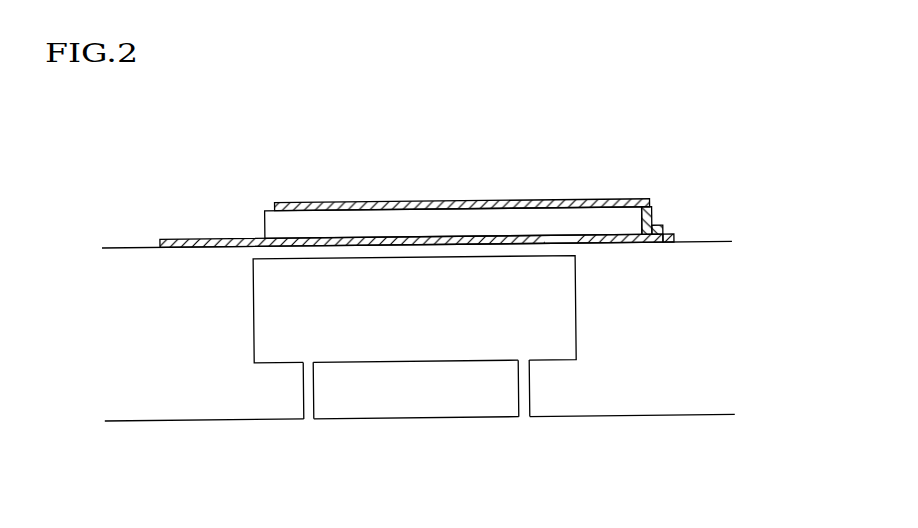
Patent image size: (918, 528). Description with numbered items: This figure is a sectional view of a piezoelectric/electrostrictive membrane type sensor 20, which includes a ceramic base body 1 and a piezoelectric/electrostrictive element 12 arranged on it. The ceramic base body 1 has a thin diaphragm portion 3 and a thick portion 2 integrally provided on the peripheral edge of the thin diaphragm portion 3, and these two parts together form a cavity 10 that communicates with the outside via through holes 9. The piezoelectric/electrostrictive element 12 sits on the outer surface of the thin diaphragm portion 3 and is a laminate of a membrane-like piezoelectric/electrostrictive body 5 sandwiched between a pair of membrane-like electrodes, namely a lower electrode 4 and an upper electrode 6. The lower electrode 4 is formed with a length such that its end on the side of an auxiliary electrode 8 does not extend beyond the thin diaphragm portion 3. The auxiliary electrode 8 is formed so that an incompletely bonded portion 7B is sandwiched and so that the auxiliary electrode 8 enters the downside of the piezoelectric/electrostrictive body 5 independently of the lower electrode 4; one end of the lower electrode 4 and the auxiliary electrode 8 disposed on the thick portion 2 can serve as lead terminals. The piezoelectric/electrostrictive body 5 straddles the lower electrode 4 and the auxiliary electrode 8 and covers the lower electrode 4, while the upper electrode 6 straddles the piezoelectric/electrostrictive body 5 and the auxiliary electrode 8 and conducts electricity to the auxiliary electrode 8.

The ceramic base body 1 is at (782, 248).
The thick portion 2 is at (658, 395).
The thin diaphragm portion 3 is at (415, 260).
The lower electrode 4 is at (160, 245).
The piezoelectric/electrostrictive body 5 is at (270, 230).
The upper electrode 6 is at (293, 204).
The incompletely bonded portion 7B is at (583, 237).
The auxiliary electrode 8 is at (680, 238).
The through holes 9 is at (308, 417).
The cavity 10 is at (552, 345).
The piezoelectric/electrostrictive element 12 is at (782, 196).
The piezoelectric/electrostrictive membrane type sensor 20 is at (700, 181).